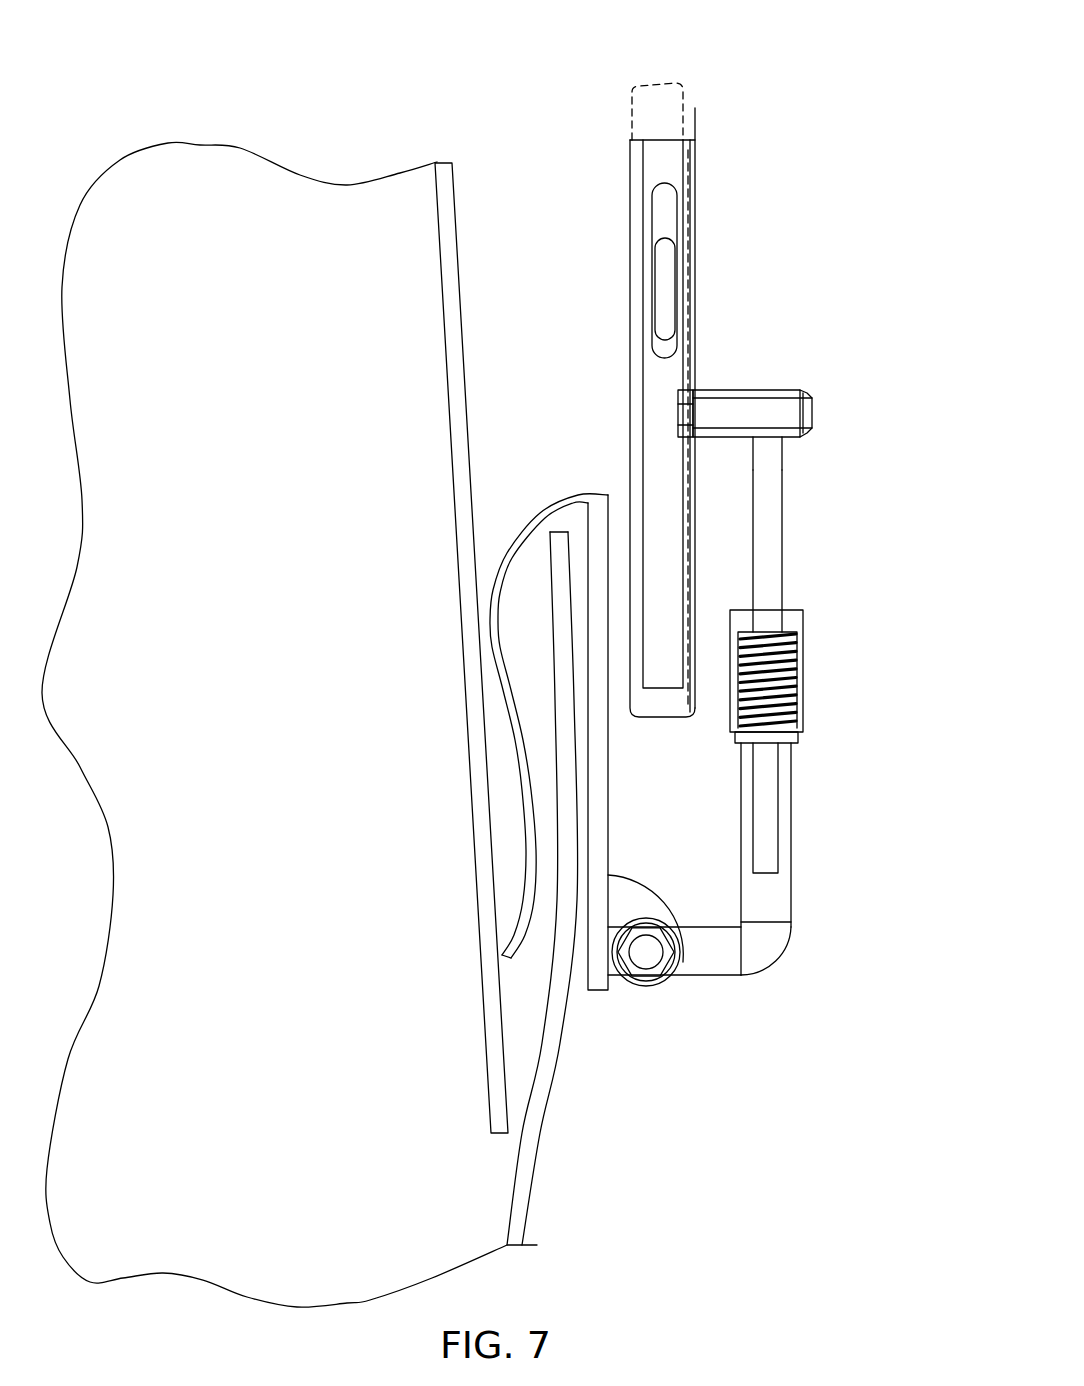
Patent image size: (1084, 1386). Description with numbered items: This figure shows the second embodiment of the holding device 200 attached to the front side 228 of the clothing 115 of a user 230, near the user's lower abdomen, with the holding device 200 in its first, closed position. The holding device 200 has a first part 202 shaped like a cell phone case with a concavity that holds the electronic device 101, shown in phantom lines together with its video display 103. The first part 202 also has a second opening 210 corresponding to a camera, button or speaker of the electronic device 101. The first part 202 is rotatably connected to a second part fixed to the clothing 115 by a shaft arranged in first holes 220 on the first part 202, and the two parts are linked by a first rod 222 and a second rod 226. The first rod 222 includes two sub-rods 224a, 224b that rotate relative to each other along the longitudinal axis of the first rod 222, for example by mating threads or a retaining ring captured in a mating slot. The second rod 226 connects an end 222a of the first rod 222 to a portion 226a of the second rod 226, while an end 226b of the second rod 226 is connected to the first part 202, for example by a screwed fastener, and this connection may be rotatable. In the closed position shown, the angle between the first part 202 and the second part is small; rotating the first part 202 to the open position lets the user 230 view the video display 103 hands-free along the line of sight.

The electronic device 101 is at (657, 86).
The video display 103 is at (622, 170).
The user's clothing 115 is at (560, 1045).
The holding device 200 is at (878, 113).
The first part 202 is at (655, 428).
The second opening 210 is at (653, 210).
The first holes 220 is at (636, 975).
The first rod 222 is at (840, 648).
The end of first rod 222a is at (783, 440).
The sub-rod 224a is at (790, 828).
The sub-rod 224b is at (782, 575).
The second rod 226 is at (795, 356).
The portion of second rod 226a is at (767, 432).
The end of second rod 226b is at (690, 390).
The front side 228 is at (463, 265).
The user 230 is at (160, 138).